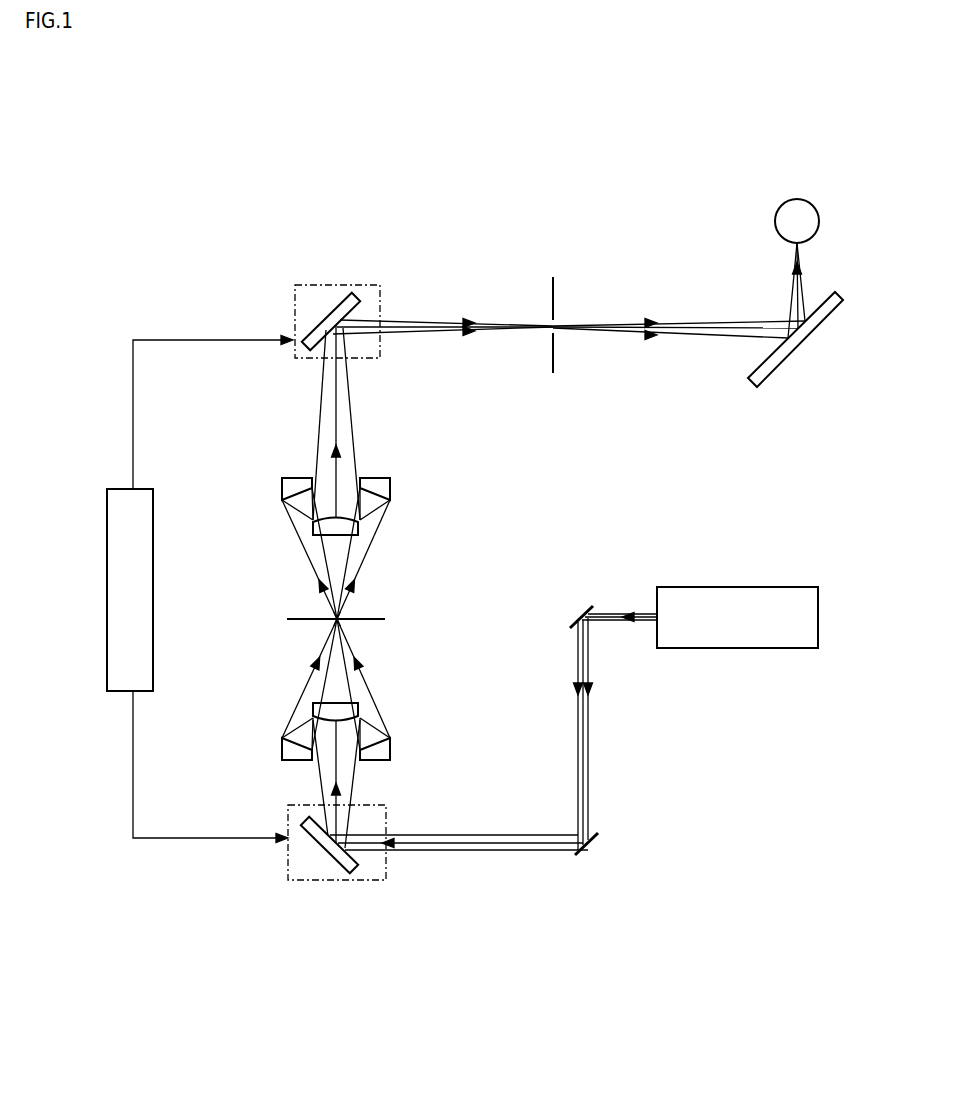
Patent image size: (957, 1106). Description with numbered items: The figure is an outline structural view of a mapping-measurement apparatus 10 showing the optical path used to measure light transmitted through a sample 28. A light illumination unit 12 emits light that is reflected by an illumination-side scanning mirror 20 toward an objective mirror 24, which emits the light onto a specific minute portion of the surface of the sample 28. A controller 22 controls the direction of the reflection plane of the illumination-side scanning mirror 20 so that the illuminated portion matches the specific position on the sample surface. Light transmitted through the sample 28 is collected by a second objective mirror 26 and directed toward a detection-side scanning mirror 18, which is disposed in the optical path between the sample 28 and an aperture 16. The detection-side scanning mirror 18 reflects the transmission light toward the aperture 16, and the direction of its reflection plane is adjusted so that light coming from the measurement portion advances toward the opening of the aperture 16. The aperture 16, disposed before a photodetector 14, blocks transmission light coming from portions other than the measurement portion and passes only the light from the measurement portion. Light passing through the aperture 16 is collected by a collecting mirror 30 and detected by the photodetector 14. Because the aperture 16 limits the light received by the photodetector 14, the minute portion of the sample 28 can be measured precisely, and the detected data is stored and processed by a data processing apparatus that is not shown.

The mapping-measurement apparatus 10 is at (225, 152).
The light illumination unit 12 is at (690, 587).
The photodetector 14 is at (795, 199).
The aperture 16 is at (553, 278).
The detection-side scanning mirror 18 is at (320, 322).
The illumination-side scanning mirror 20 is at (328, 852).
The controller 22 is at (200, 589).
The objective mirror 24 is at (437, 750).
The objective mirror 26 is at (392, 478).
The sample 28 is at (385, 619).
The collecting mirror 30 is at (775, 368).